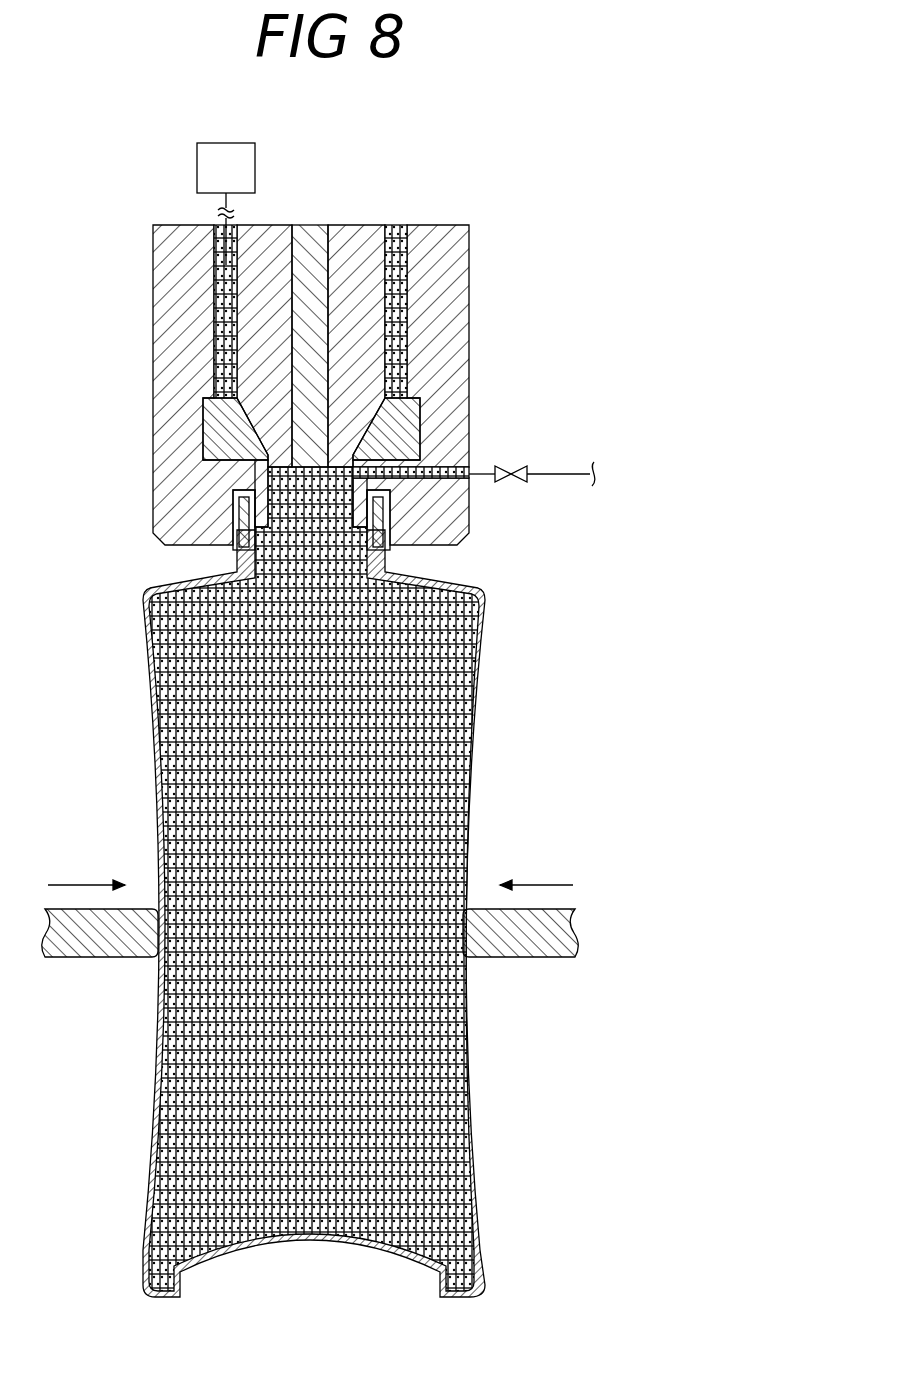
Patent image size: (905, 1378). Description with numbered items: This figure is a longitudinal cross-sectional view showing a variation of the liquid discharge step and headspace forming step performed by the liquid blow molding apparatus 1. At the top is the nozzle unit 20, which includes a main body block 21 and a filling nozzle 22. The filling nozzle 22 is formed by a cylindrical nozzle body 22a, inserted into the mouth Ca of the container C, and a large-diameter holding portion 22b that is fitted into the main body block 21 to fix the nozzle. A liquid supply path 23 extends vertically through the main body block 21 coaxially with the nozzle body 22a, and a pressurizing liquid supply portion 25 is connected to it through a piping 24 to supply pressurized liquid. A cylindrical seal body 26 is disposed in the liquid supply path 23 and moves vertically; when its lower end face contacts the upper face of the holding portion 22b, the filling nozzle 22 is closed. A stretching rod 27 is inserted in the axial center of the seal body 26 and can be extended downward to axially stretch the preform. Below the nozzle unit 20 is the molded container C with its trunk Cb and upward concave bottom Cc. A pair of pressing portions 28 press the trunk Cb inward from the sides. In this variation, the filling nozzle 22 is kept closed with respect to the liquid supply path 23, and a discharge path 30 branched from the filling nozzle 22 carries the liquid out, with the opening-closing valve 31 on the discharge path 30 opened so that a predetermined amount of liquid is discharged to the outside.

The liquid blow molding apparatus 1 is at (538, 268).
The nozzle unit 20 is at (335, 358).
The main body block 21 is at (458, 302).
The filling nozzle 22 is at (420, 428).
The nozzle body 22a is at (248, 510).
The holding portion 22b is at (215, 428).
The liquid supply path 23 is at (226, 348).
The piping 24 is at (226, 208).
The pressurizing liquid supply portion 25 is at (226, 143).
The seal body 26 is at (262, 300).
The stretching rod 27 is at (310, 272).
The pressing portions 28 is at (95, 945).
The discharge path 30 is at (430, 472).
The opening-closing valve 31 is at (525, 470).
The container C is at (327, 890).
The mouth Ca is at (372, 522).
The trunk Cb is at (464, 815).
The bottom Cc is at (360, 1243).